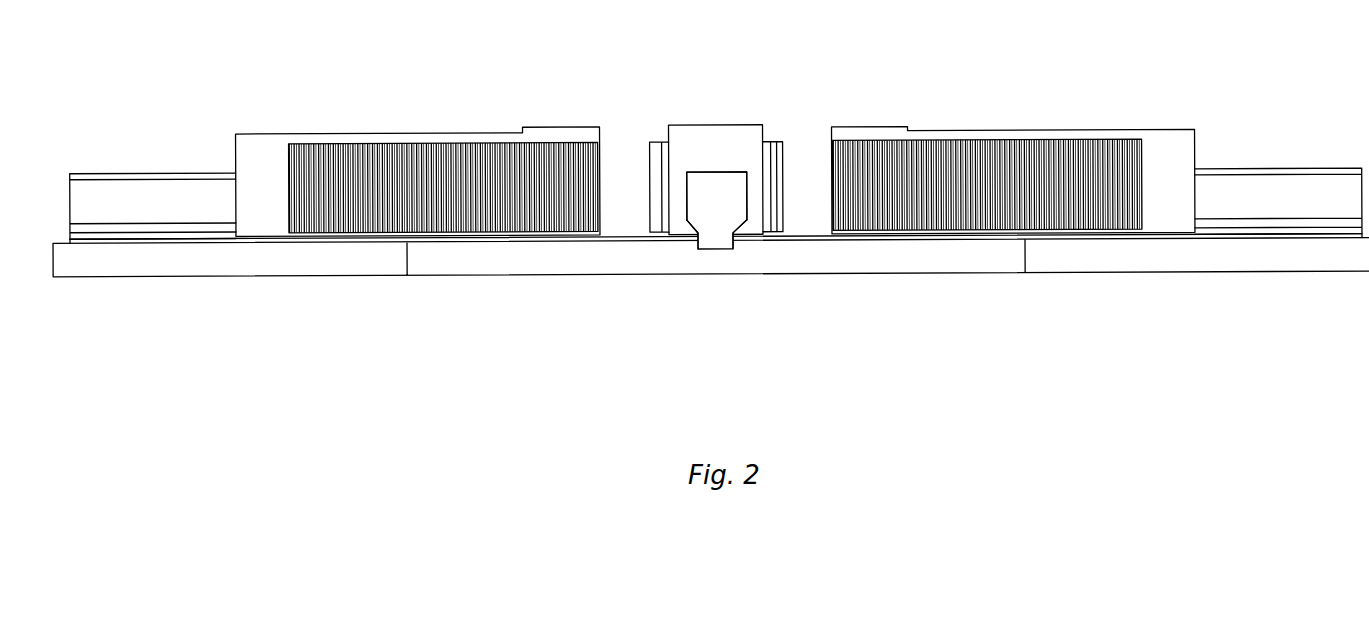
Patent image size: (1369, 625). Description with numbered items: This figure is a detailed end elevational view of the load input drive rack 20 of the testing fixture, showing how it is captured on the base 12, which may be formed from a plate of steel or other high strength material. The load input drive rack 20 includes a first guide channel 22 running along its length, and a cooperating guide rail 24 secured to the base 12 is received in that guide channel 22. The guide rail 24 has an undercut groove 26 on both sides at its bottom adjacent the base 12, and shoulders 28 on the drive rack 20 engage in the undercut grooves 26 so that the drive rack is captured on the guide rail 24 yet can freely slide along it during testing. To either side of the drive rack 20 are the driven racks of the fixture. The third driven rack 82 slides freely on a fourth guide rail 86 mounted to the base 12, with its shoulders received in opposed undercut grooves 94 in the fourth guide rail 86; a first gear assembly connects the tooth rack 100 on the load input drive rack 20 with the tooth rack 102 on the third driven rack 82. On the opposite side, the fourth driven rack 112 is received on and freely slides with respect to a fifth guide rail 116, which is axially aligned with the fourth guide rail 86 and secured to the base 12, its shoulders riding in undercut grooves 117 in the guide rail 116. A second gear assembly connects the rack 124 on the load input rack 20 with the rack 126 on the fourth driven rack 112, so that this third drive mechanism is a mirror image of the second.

The base 12 is at (267, 267).
The load input drive rack 20 is at (727, 132).
The first guide channel 22 is at (705, 172).
The guide rail 24 is at (727, 193).
The undercut groove 26 is at (688, 233).
The shoulders 28 is at (743, 231).
The third driven rack 82 is at (258, 150).
The fourth guide rail 86 is at (125, 190).
The undercut grooves 94 is at (122, 236).
The tooth rack 100 is at (646, 210).
The tooth rack 102 is at (392, 157).
The fourth driven rack 112 is at (1170, 143).
The fifth guide rail 116 is at (1240, 192).
The undercut grooves 117 is at (1250, 231).
The rack 124 is at (778, 180).
The rack 126 is at (980, 157).